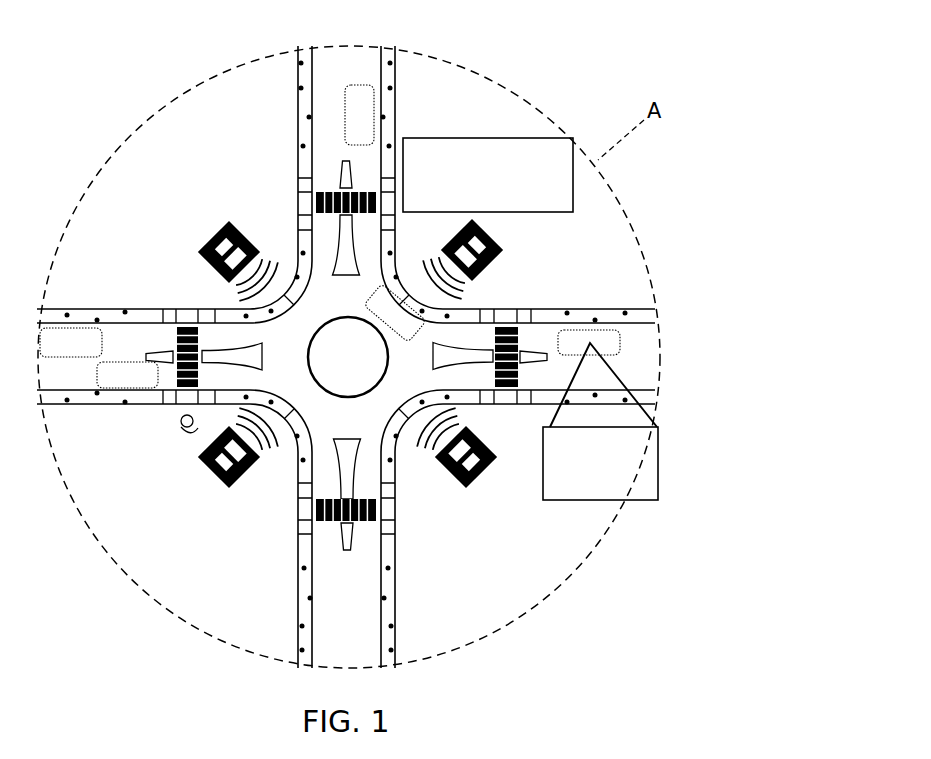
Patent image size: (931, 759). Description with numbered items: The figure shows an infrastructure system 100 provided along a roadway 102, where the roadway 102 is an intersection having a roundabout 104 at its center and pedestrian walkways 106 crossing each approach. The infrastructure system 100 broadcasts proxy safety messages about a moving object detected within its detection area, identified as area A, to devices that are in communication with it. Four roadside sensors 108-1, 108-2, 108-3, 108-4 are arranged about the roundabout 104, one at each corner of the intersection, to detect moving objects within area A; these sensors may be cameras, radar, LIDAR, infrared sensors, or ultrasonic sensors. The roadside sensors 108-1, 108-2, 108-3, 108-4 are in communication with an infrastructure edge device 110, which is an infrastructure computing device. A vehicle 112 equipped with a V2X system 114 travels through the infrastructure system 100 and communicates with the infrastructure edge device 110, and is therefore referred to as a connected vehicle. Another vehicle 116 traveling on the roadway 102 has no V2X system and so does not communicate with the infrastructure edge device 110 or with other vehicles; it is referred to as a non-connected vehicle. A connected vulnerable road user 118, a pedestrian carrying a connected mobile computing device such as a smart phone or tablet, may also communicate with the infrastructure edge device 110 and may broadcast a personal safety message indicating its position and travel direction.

The infrastructure system 100 is at (567, 70).
The roadway 102 is at (297, 157).
The roundabout 104 is at (333, 393).
The pedestrian walkways 106 is at (193, 327).
The roadside sensor 108-1 is at (227, 232).
The roadside sensor 108-2 is at (498, 243).
The roadside sensor 108-3 is at (480, 478).
The roadside sensor 108-4 is at (212, 472).
The infrastructure edge device 110 is at (477, 137).
The vehicle 112 is at (620, 343).
The V2X system 114 is at (658, 453).
The vehicle 116 is at (358, 83).
The connected vulnerable road user 118 is at (180, 423).